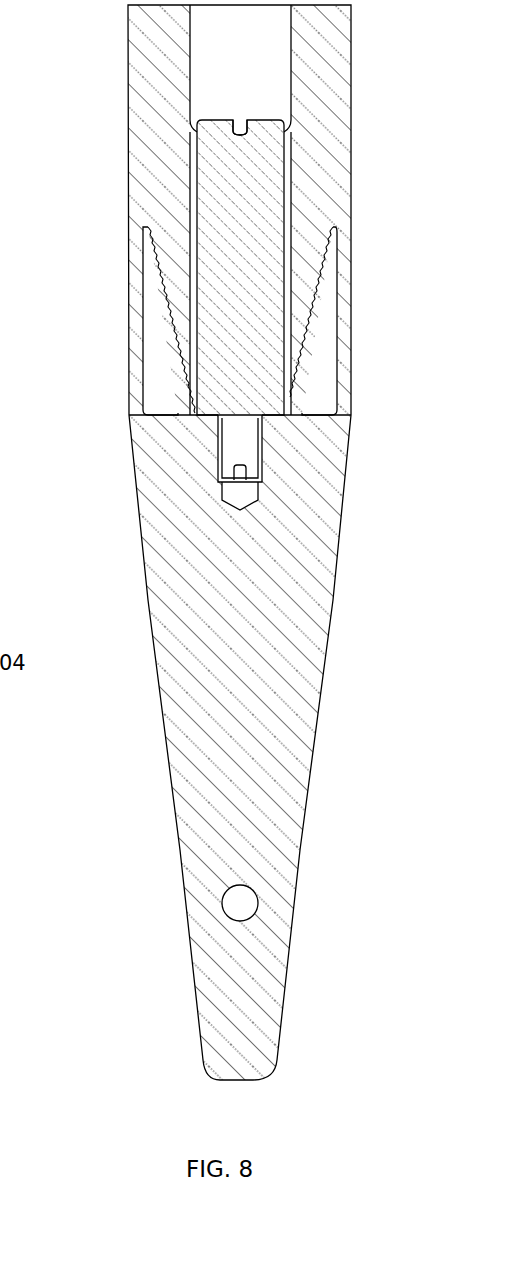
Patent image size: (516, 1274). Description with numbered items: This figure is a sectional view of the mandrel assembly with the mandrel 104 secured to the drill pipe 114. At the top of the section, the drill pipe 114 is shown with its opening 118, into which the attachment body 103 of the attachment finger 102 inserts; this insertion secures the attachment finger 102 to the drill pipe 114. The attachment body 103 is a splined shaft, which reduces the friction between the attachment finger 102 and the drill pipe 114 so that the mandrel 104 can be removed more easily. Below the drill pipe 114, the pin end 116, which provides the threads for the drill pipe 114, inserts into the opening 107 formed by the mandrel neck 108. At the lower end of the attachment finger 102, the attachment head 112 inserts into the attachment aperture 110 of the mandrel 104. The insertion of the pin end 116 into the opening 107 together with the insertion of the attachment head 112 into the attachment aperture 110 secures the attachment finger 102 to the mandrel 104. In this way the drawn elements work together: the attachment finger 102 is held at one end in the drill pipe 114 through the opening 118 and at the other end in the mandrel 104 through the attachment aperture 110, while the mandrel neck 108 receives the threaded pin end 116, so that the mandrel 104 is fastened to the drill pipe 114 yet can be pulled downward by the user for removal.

The attachment finger 102 is at (255, 278).
The attachment body 103 is at (225, 227).
The mandrel 104 is at (200, 807).
The opening 107 is at (159, 391).
The mandrel neck 108 is at (348, 274).
The attachment aperture 110 is at (243, 496).
The attachment head 112 is at (255, 452).
The drill pipe 114 is at (340, 135).
The pin end 116 is at (313, 365).
The opening 118 is at (230, 92).